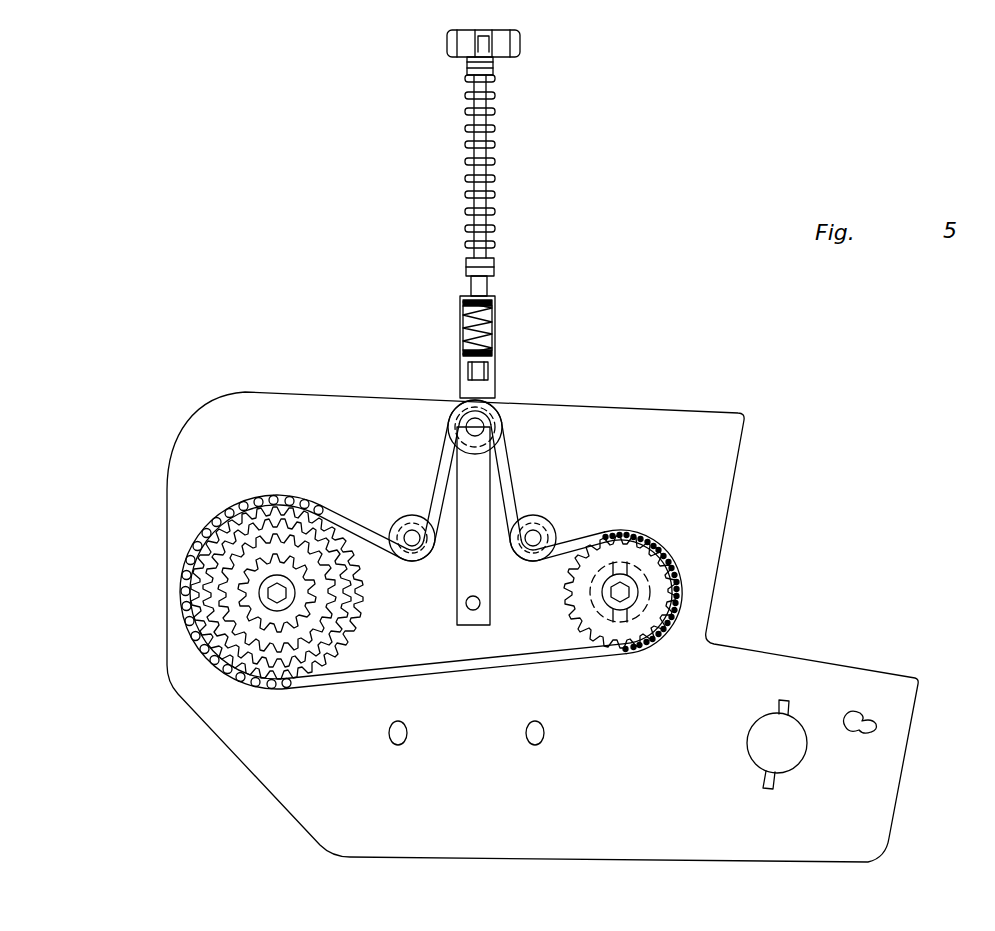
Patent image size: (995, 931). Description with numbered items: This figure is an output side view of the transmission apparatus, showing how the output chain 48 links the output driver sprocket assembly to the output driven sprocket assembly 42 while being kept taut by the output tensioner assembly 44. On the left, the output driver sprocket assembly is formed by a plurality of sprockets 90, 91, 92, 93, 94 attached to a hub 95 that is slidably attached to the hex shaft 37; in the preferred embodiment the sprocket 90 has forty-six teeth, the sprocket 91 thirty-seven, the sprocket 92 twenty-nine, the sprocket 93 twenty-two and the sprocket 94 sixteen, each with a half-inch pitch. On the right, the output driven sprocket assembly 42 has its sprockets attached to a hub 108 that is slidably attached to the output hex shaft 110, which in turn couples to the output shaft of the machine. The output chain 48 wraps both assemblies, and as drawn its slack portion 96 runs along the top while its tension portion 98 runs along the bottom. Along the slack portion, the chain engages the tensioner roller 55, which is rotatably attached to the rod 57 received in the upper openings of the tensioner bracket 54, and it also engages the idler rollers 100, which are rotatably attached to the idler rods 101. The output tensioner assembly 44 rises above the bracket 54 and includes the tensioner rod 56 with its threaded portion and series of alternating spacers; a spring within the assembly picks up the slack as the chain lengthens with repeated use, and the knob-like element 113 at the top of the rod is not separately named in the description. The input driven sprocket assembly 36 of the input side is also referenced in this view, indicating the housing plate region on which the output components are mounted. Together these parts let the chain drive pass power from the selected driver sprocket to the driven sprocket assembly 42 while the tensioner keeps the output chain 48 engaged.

The adjustment knob 113 is at (520, 44).
The tensioner bracket 54 is at (495, 100).
The output tensioner assembly 44 is at (486, 228).
The tensioner rod 56 is at (488, 284).
The tensioner roller 55 is at (458, 400).
The rod 57 is at (485, 418).
The slack portion 96 is at (503, 468).
The idler rollers 100 is at (415, 517).
The idler rods 101 is at (408, 532).
The sprocket 94 is at (290, 497).
The hub 95 is at (272, 495).
The output chain 48 is at (431, 583).
The tension portion 98 is at (580, 657).
The hex shaft 37 is at (280, 609).
The sprocket 93 is at (352, 572).
The sprocket 92 is at (348, 598).
The sprocket 91 is at (345, 622).
The sprocket 90 is at (345, 668).
The input driven sprocket assembly 36 is at (345, 676).
The output driven sprocket assembly 42 is at (674, 597).
The output hex shaft 110 is at (640, 590).
The hub 108 is at (612, 640).